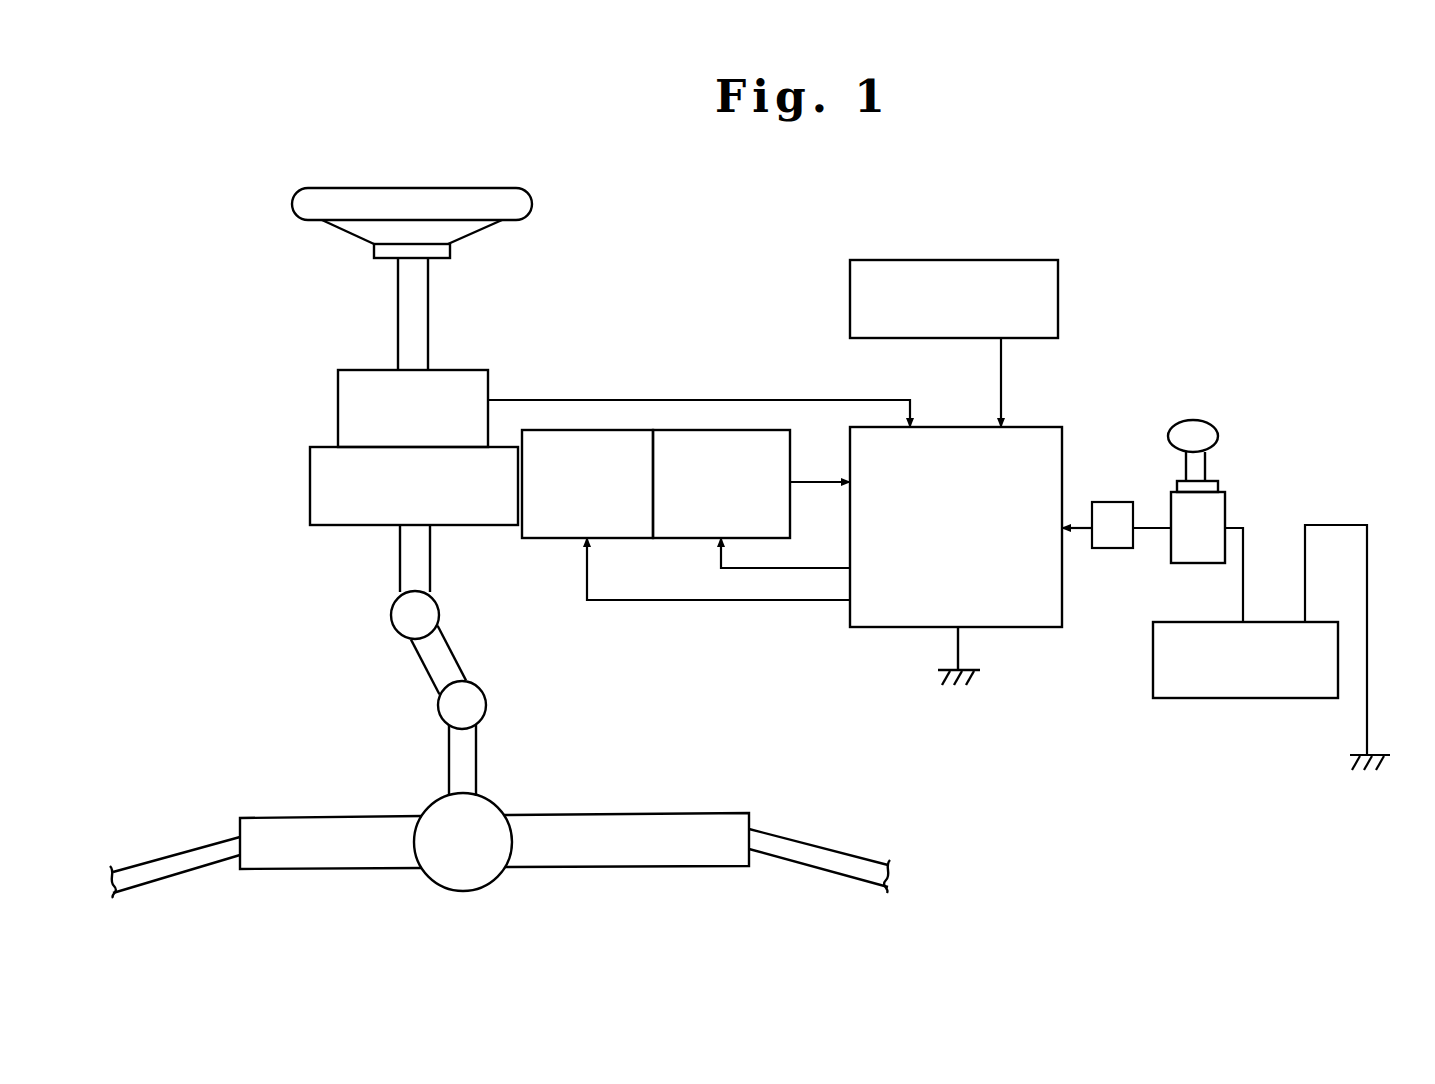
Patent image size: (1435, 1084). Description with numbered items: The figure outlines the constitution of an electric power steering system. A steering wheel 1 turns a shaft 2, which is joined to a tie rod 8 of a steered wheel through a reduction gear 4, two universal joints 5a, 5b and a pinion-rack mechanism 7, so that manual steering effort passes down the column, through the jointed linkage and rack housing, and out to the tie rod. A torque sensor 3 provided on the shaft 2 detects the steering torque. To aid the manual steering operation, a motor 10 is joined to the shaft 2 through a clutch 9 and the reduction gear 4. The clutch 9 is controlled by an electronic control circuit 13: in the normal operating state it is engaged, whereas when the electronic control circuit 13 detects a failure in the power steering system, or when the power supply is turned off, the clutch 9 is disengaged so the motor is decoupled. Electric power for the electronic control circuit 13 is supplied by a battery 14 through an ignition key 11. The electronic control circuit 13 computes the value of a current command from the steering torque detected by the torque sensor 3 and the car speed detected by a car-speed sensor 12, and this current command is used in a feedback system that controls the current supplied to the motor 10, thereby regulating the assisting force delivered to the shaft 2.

The steering wheel 1 is at (520, 200).
The shaft 2 is at (403, 301).
The torque sensor 3 is at (342, 396).
The reduction gear 4 is at (312, 482).
The universal joint 5a is at (397, 612).
The universal joint 5b is at (437, 710).
The pinion-rack mechanism 7 is at (507, 803).
The tie rod 8 is at (813, 850).
The clutch 9 is at (580, 435).
The motor 10 is at (712, 432).
The ignition key 11 is at (1188, 422).
The car-speed sensor 12 is at (1012, 260).
The electronic control circuit 13 is at (1027, 427).
The battery 14 is at (1278, 688).